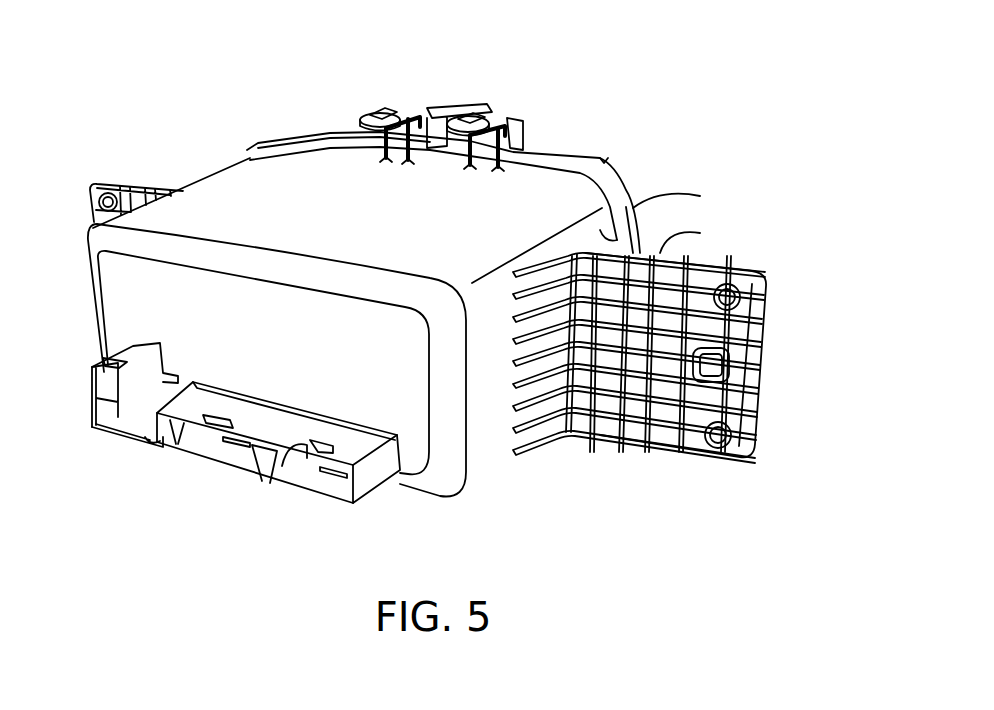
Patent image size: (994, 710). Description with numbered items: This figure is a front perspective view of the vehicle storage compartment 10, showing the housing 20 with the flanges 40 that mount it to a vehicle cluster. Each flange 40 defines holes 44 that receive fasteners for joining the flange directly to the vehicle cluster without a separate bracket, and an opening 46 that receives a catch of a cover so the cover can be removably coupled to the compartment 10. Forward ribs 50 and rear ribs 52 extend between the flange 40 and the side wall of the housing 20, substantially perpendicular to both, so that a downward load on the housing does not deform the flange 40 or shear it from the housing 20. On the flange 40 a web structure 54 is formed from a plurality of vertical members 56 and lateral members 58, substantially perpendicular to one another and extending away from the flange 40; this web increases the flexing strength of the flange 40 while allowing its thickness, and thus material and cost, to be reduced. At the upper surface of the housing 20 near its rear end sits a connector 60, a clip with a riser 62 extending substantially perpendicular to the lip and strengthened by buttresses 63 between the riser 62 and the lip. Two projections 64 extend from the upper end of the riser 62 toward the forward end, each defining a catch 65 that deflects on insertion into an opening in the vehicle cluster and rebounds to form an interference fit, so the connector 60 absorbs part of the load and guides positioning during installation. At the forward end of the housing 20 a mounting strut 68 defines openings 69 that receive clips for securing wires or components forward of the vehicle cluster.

The vehicle storage compartment 10 is at (655, 94).
The housing 20 is at (243, 196).
The flange 40 is at (444, 319).
The hole 44 is at (742, 289).
The opening 46 is at (716, 366).
The forward rib 50 is at (565, 422).
The rear rib 52 is at (634, 231).
The web structure 54 is at (668, 407).
The vertical member 56 is at (745, 331).
The lateral member 58 is at (742, 268).
The connector 60 is at (459, 92).
The riser 62 is at (430, 108).
The buttress 63 is at (524, 130).
The projection 64 is at (366, 119).
The catch 65 is at (386, 112).
The mounting strut 68 is at (242, 440).
The opening 69 is at (102, 362).